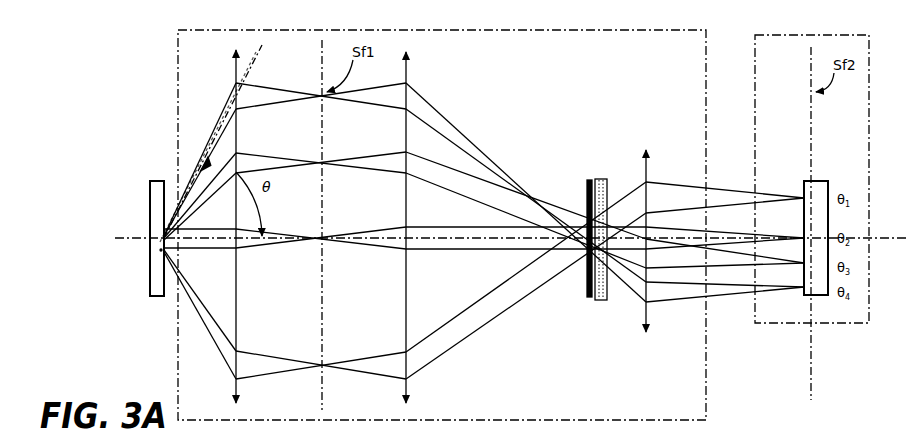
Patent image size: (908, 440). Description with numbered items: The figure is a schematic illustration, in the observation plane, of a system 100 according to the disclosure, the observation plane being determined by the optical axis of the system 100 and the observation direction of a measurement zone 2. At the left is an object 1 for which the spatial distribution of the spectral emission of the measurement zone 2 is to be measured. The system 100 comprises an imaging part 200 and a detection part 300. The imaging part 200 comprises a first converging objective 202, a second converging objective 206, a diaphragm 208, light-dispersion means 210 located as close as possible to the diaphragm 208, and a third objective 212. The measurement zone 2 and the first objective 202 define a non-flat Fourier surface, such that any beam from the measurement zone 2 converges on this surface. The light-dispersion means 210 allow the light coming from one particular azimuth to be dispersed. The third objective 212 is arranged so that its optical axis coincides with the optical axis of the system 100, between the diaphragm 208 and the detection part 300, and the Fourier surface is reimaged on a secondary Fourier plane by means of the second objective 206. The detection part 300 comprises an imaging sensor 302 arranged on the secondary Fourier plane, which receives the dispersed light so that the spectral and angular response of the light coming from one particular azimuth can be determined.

The system 100 is at (100, 92).
The object 1 is at (157, 178).
The measurement zone 2 is at (156, 251).
The first converging objective 202 is at (233, 78).
The second converging objective 206 is at (409, 79).
The diaphragm 208 is at (584, 190).
The light-dispersion means 210 is at (604, 178).
The third objective 212 is at (650, 165).
The imaging sensor 302 is at (818, 178).
The imaging part 200 is at (706, 362).
The detection part 300 is at (783, 323).